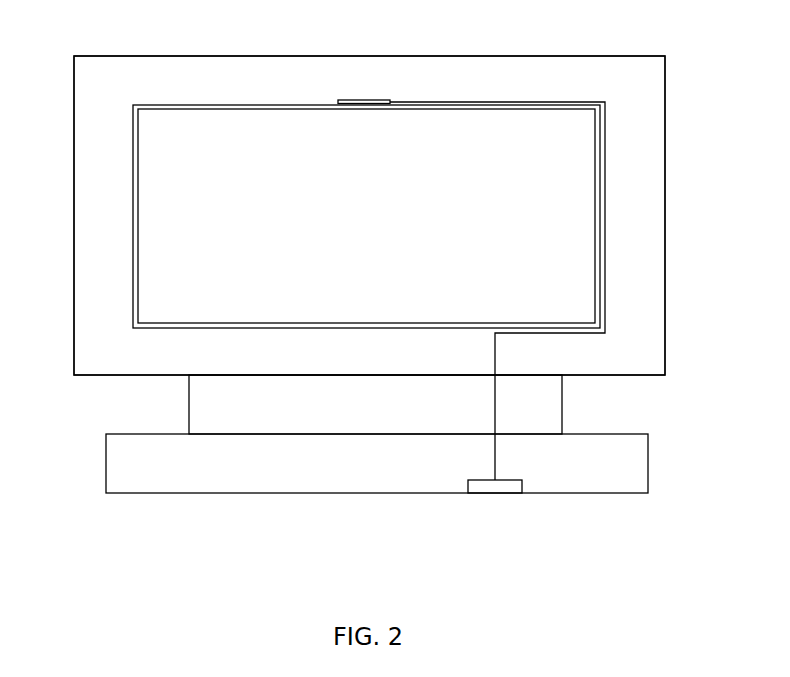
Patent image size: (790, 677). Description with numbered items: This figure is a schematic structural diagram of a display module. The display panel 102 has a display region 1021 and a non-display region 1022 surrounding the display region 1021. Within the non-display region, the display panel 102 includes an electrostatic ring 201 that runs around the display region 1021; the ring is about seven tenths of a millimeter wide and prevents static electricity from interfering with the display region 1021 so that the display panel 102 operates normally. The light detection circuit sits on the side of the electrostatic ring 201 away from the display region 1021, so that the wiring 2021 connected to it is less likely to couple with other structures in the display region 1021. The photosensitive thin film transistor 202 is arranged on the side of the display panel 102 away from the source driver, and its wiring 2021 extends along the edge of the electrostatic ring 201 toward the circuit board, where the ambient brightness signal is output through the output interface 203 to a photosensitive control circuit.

The display panel 102 is at (208, 55).
The non-display region 1022 is at (111, 87).
The display region 1021 is at (228, 142).
The electrostatic ring 201 is at (406, 106).
The photosensitive thin film transistor 202 is at (353, 98).
The wiring 2021 is at (508, 101).
The output interface 203 is at (483, 494).